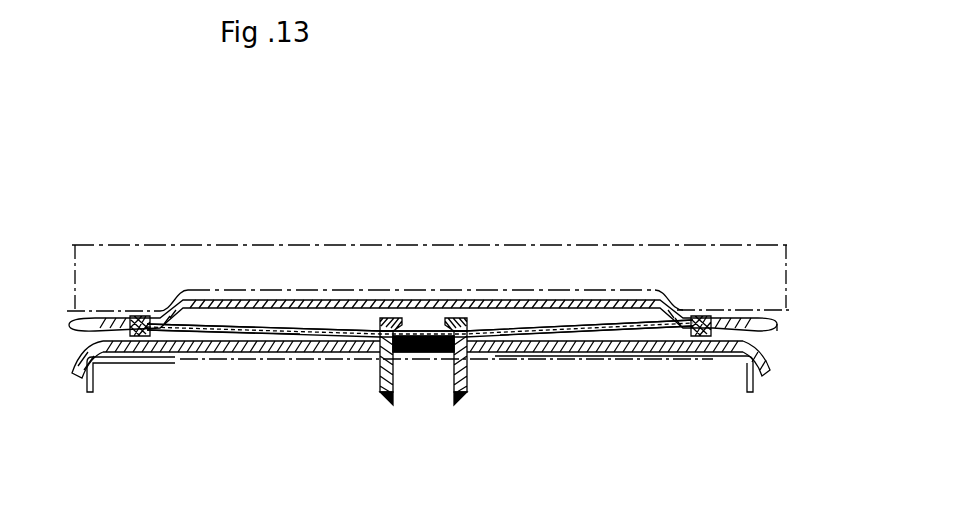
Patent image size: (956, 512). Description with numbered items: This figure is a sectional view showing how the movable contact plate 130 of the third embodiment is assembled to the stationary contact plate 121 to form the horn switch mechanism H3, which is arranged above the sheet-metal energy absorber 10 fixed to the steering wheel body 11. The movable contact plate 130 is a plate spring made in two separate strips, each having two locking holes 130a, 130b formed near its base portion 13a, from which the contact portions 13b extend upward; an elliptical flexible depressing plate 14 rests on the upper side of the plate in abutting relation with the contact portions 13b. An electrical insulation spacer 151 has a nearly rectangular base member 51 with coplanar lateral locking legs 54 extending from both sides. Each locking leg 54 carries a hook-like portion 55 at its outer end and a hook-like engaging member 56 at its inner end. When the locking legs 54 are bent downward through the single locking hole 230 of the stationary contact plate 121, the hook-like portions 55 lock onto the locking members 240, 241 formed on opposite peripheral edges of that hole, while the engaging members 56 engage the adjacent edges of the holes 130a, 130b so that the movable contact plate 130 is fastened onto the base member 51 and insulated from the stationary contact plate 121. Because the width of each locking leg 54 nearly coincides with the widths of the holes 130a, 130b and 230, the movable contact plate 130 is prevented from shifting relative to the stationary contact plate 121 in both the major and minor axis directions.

The energy absorber 10 is at (95, 388).
The housing 11 is at (172, 262).
The base portion 13a is at (420, 325).
The contact portions 13b is at (280, 325).
The flexible depressing plate 14 is at (84, 318).
The base member 51 is at (423, 344).
The locking legs 54 is at (362, 300).
The hook-like portion 55 is at (383, 397).
The hook-like engaging member 56 is at (381, 318).
The stationary contact plate 121 is at (648, 357).
The movable contact plate 130 is at (420, 332).
The locking hole 130a is at (330, 326).
The locking hole 130b is at (490, 327).
The electrical insulation spacer 151 is at (434, 352).
The locking hole 230 is at (407, 352).
The locking member 240 is at (370, 370).
The locking member 241 is at (485, 358).
The horn switch mechanism H3 is at (786, 346).